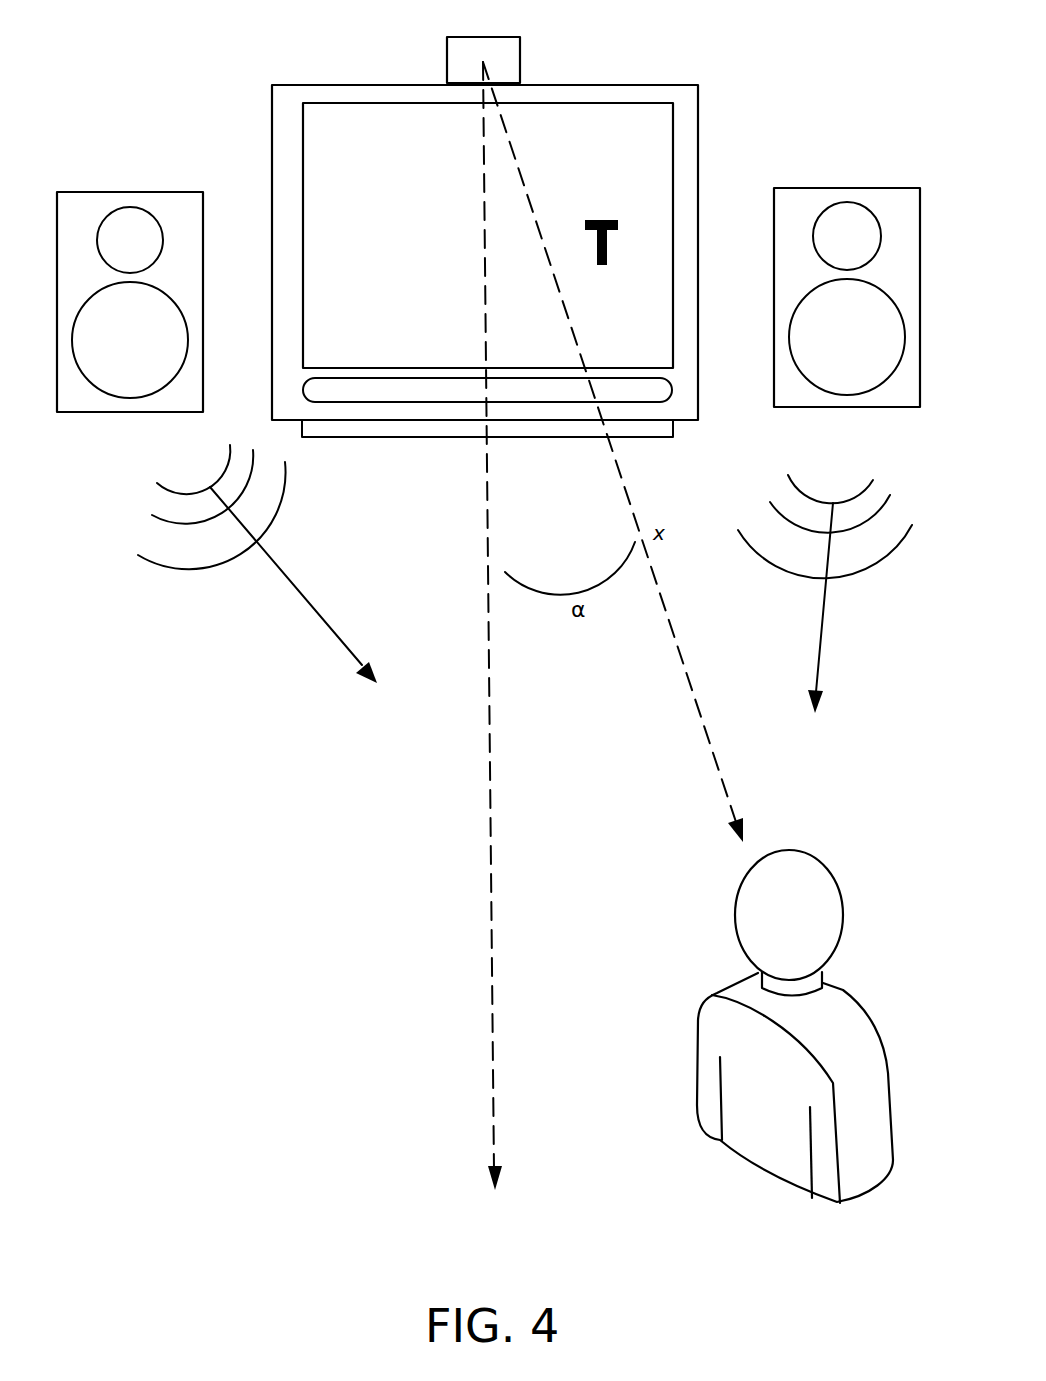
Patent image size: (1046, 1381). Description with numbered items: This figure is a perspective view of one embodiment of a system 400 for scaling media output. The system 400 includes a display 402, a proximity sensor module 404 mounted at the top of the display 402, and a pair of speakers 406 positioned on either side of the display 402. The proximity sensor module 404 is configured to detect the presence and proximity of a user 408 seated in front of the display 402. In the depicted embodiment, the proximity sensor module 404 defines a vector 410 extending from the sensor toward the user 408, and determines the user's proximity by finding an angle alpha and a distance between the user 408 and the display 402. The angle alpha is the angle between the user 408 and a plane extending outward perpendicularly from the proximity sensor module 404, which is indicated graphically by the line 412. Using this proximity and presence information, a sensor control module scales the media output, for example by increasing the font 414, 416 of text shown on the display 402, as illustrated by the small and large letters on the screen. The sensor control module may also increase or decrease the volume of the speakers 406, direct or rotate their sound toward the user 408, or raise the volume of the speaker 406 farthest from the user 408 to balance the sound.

The system 400 is at (122, 55).
The display 402 is at (700, 97).
The proximity sensor module 404 is at (520, 49).
The speakers 406 is at (107, 192).
The user 408 is at (805, 850).
The vector 410 is at (670, 623).
The line 412 is at (492, 798).
The font 414 is at (370, 237).
The font 416 is at (578, 217).